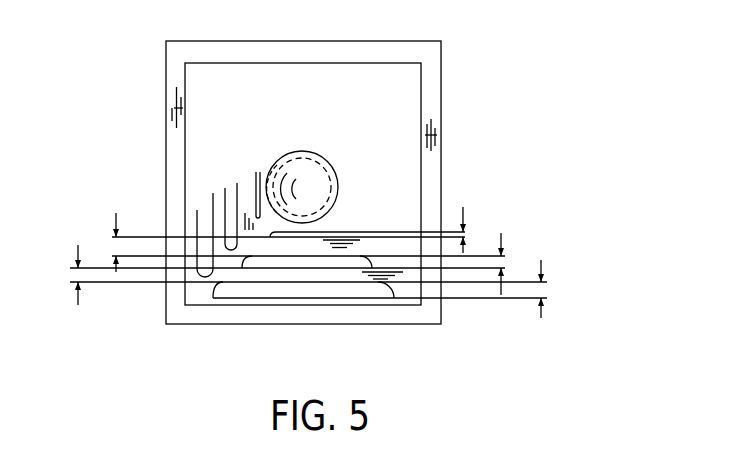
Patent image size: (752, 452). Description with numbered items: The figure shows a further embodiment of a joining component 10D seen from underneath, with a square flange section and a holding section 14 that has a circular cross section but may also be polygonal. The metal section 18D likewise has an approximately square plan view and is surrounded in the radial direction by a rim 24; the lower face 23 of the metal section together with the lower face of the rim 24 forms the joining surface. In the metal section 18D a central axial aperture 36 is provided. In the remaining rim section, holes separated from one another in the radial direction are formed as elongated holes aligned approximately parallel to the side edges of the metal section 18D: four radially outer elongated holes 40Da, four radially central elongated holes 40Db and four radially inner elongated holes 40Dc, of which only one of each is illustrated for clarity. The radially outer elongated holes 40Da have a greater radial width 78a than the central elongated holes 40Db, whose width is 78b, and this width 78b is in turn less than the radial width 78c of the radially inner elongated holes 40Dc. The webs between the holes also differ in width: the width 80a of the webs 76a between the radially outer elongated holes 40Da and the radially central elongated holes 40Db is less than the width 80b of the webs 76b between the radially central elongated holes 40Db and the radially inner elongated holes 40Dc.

The joining component 10D is at (481, 56).
The metal section 18D is at (233, 74).
The lower face of the metal section 23 is at (279, 126).
The rim 24 is at (433, 135).
The central axial aperture 36 is at (303, 150).
The holding section 14 is at (329, 168).
The radially outer elongated holes 40Da is at (362, 288).
The radially central elongated holes 40Db is at (325, 258).
The radially inner elongated holes 40Dc is at (288, 234).
The webs 76a is at (343, 270).
The webs 76b is at (270, 247).
The width of the radially outer elongated holes 78a is at (540, 290).
The width of the radially central elongated holes 78b is at (502, 263).
The radial width of the radially inner elongated holes 78c is at (467, 233).
The width of the webs between outer and central holes 80a is at (77, 277).
The width of the webs between central and inner holes 80b is at (118, 247).